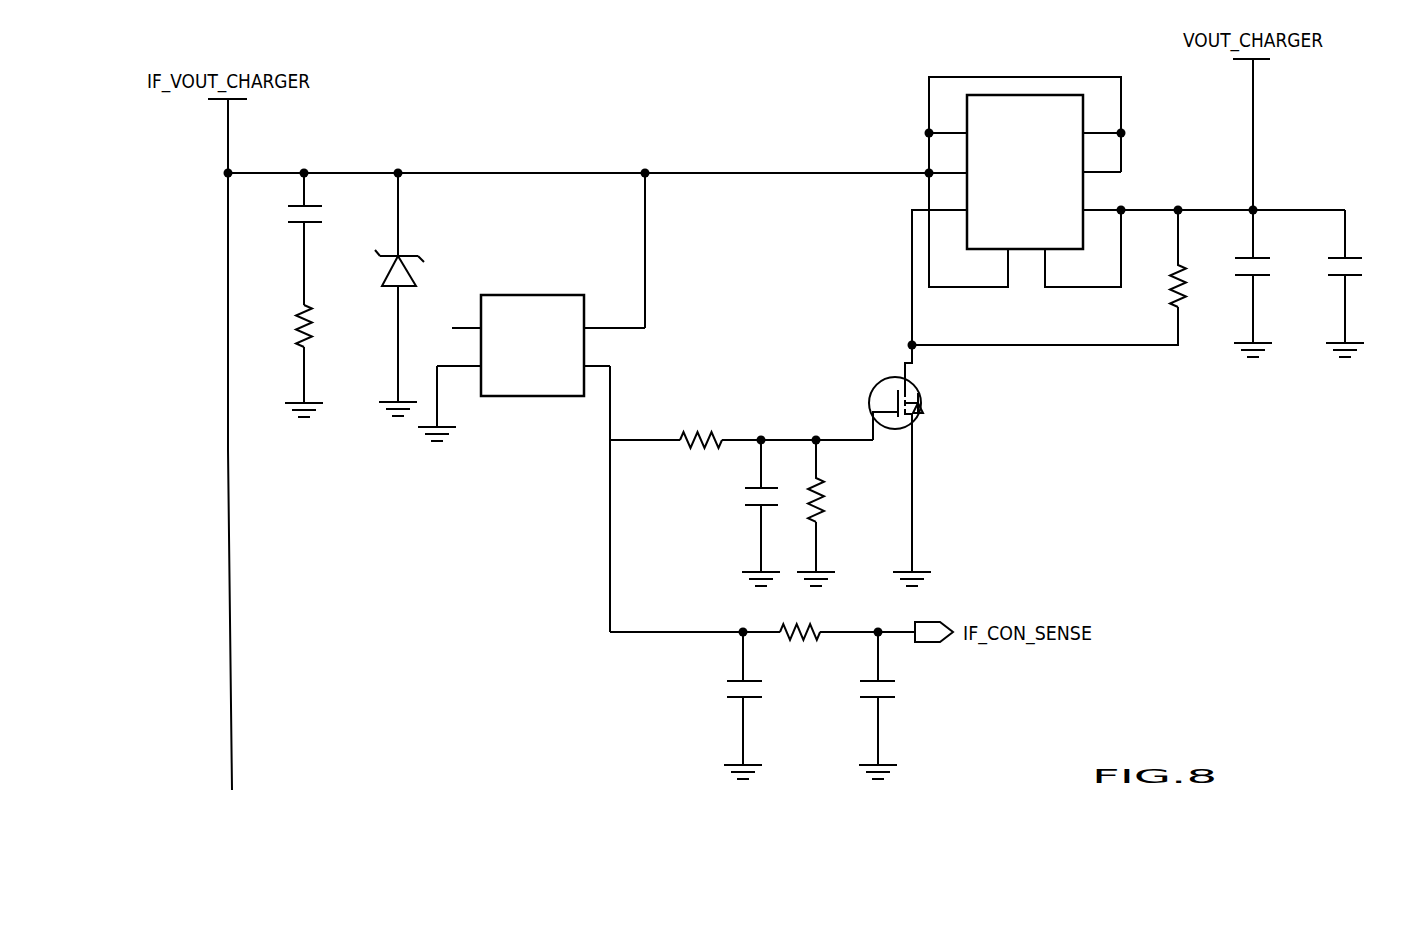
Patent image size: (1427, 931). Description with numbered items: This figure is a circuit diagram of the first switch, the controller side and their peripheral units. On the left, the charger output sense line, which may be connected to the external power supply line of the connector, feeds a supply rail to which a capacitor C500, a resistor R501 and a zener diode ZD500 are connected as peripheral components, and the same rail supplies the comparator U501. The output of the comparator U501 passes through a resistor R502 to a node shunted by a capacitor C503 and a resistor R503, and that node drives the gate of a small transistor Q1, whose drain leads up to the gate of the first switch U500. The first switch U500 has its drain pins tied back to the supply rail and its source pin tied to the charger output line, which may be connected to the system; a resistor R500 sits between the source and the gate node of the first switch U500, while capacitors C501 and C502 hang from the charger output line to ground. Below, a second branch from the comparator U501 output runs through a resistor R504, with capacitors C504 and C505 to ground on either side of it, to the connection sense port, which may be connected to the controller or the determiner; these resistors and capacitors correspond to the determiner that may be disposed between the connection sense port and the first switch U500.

The capacitor 4700nF 10V C500 is at (277, 239).
The resistor 2.2 ohm R501 is at (286, 355).
The zener diode RDP2031 ZD500 is at (370, 294).
The comparator U501 is at (531, 342).
The resistor 10K R502 is at (702, 463).
The capacitor 2200nF 10V C503 is at (733, 513).
The resistor 1M R503 is at (835, 513).
The MOSFET transistor Q1 is at (895, 465).
The first switch U500 is at (1137, 155).
The resistor 100K R500 is at (1157, 260).
The capacitor 1000nF 25V C501 is at (1277, 307).
The capacitor 82pF 25V C502 is at (1366, 283).
The resistor (open) R504 is at (802, 620).
The capacitor 6.8nF 25V C504 is at (721, 705).
The capacitor (open) C505 is at (853, 705).